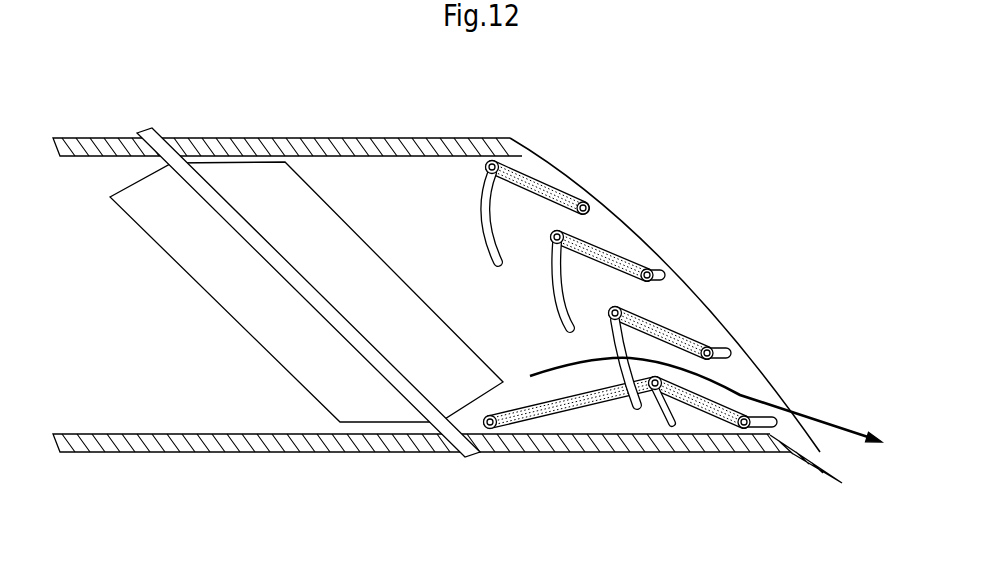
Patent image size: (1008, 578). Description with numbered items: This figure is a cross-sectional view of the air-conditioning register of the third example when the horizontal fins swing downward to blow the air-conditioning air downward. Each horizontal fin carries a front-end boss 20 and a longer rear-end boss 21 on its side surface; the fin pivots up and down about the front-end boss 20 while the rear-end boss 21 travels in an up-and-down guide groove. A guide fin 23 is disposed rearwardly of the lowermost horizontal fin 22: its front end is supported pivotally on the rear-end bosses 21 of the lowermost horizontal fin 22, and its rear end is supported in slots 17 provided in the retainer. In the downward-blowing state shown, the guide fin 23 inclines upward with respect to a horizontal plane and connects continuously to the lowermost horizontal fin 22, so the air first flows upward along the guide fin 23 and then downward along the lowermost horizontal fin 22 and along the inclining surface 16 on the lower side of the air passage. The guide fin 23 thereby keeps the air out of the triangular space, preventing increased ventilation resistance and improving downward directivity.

The inclining surface 16 is at (818, 453).
The slots 17 is at (495, 428).
The front-end boss 20 is at (740, 427).
The rear-end boss 21 is at (652, 390).
The lowermost horizontal fin 22 is at (712, 415).
The guide fin 23 is at (553, 402).